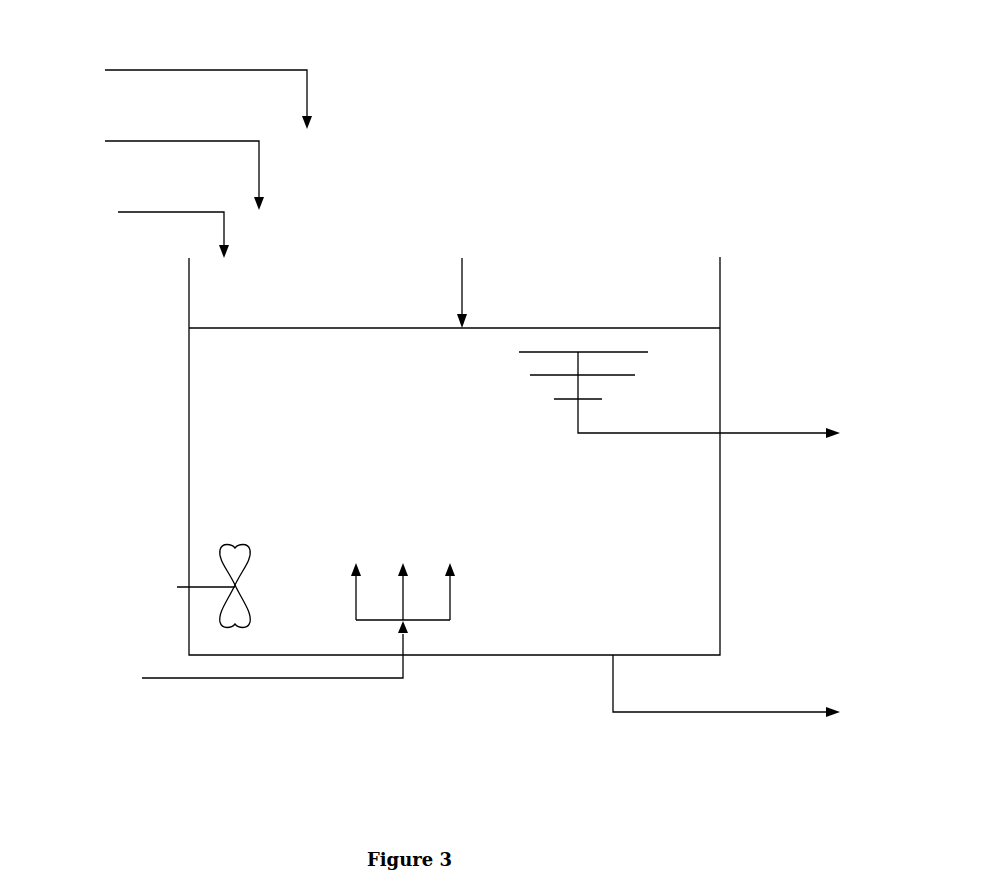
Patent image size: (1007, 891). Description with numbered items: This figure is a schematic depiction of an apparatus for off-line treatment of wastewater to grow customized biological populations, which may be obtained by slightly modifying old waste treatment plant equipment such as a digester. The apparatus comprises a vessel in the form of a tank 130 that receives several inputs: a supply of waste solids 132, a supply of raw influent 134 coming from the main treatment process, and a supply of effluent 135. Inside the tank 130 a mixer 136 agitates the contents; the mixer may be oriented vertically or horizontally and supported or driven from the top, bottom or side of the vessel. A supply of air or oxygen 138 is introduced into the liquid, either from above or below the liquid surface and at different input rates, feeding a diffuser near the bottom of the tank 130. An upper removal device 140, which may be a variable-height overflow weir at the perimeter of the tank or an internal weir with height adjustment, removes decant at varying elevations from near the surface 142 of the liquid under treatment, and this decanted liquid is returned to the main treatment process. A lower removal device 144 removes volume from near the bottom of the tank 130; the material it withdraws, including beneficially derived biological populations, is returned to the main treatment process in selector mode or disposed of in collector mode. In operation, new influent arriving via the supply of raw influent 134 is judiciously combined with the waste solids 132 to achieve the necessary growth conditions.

The tank 130 is at (189, 424).
The supply of waste solids 132 is at (192, 70).
The supply of raw influent 134 is at (166, 141).
The supply of effluent 135 is at (166, 212).
The mixer 136 is at (234, 586).
The supply of air or oxygen 138 is at (247, 678).
The upper removal device 140 is at (542, 376).
The surface 142 is at (466, 280).
The lower removal device 144 is at (745, 712).